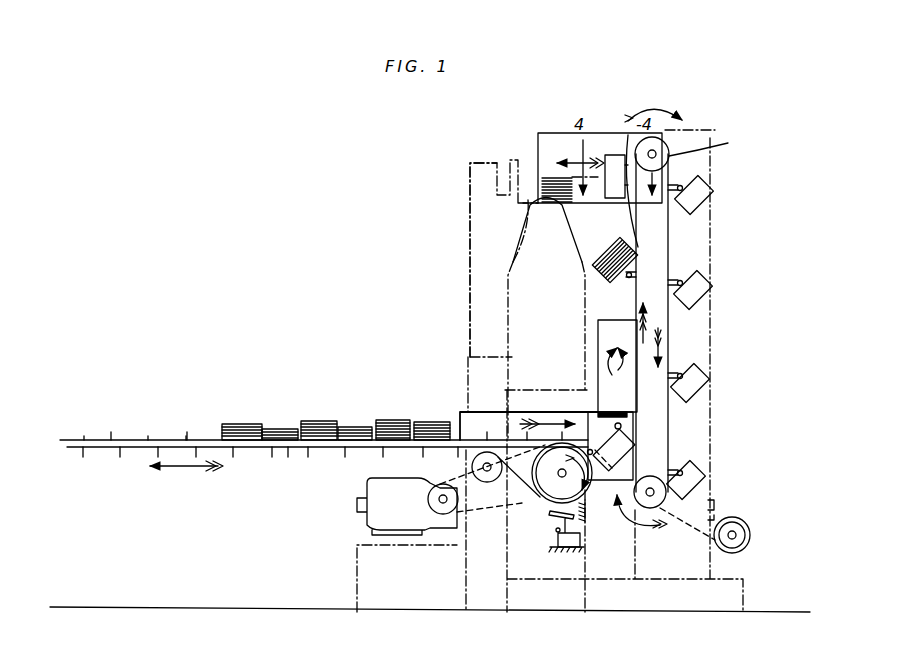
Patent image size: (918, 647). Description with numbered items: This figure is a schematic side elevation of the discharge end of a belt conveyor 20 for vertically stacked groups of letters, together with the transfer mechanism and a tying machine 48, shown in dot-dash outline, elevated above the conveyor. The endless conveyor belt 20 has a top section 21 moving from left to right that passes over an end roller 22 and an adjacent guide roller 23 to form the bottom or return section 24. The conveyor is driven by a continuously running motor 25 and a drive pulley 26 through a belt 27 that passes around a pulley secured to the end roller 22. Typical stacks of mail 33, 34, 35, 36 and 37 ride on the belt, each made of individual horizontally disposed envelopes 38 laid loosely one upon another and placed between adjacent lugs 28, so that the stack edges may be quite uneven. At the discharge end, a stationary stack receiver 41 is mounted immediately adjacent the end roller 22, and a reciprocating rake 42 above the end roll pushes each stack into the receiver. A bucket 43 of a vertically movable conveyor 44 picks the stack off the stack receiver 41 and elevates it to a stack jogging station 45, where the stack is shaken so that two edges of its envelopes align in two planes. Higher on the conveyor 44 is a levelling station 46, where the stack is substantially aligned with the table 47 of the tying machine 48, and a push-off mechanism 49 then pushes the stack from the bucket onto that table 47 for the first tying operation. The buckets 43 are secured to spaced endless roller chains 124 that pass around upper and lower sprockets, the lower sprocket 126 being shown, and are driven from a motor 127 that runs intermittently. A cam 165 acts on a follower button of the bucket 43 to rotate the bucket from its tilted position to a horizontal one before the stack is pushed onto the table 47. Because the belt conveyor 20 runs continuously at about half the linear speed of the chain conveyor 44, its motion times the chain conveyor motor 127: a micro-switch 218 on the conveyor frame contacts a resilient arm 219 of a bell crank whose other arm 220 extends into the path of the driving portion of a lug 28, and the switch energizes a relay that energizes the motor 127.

The conveyor belt 20 is at (112, 453).
The top section 21 is at (85, 440).
The end roller 22 is at (541, 474).
The guide roller 23 is at (488, 482).
The return section 24 is at (288, 450).
The motor 25 is at (407, 506).
The drive pulley 26 is at (443, 514).
The belt 27 is at (515, 505).
The lugs 28 is at (186, 440).
The stack of mail 33 is at (430, 422).
The stack of mail 34 is at (388, 420).
The stack of mail 35 is at (350, 427).
The stack of mail 36 is at (316, 421).
The stack of mail 37 is at (272, 429).
The envelopes 38 is at (226, 424).
The stack receiver 41 is at (605, 484).
The reciprocating rake 42 is at (485, 410).
The bucket 43 is at (613, 445).
The vertically movable conveyor 44 is at (670, 341).
The stack jogging station 45 is at (596, 335).
The levelling station 46 is at (613, 155).
The table 47 is at (528, 200).
The tying machine 48 is at (467, 237).
The push-off mechanism 49 is at (601, 131).
The roller chains 124 is at (668, 441).
The lower sprocket 126 is at (668, 508).
The motor 127 is at (750, 534).
The cam 165 is at (633, 212).
The micro-switch 218 is at (552, 541).
The resilient arm 219 is at (585, 522).
The arm 220 is at (556, 516).